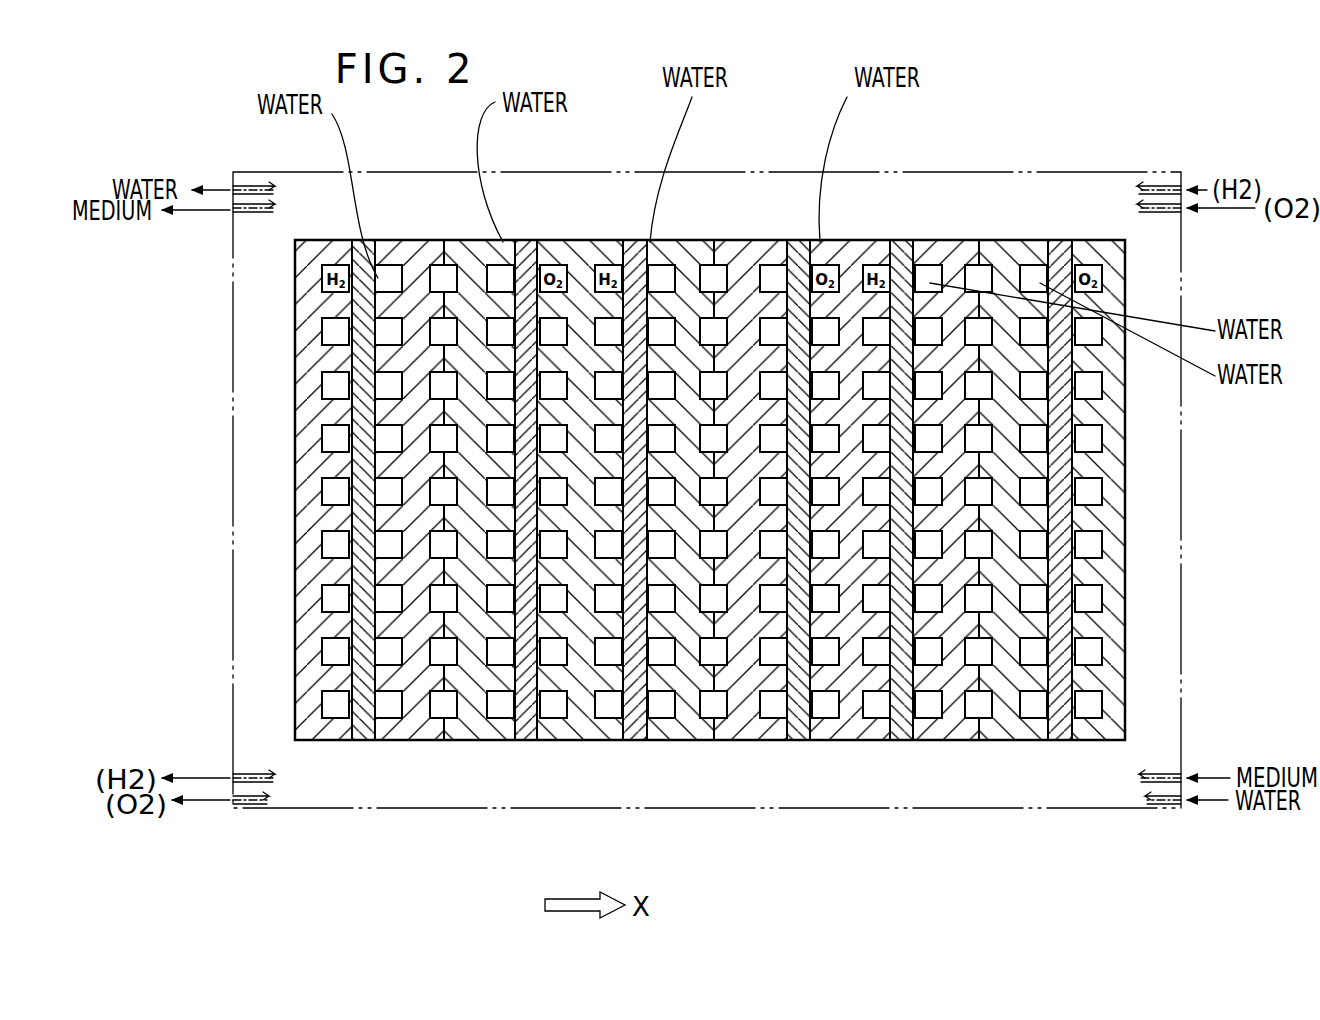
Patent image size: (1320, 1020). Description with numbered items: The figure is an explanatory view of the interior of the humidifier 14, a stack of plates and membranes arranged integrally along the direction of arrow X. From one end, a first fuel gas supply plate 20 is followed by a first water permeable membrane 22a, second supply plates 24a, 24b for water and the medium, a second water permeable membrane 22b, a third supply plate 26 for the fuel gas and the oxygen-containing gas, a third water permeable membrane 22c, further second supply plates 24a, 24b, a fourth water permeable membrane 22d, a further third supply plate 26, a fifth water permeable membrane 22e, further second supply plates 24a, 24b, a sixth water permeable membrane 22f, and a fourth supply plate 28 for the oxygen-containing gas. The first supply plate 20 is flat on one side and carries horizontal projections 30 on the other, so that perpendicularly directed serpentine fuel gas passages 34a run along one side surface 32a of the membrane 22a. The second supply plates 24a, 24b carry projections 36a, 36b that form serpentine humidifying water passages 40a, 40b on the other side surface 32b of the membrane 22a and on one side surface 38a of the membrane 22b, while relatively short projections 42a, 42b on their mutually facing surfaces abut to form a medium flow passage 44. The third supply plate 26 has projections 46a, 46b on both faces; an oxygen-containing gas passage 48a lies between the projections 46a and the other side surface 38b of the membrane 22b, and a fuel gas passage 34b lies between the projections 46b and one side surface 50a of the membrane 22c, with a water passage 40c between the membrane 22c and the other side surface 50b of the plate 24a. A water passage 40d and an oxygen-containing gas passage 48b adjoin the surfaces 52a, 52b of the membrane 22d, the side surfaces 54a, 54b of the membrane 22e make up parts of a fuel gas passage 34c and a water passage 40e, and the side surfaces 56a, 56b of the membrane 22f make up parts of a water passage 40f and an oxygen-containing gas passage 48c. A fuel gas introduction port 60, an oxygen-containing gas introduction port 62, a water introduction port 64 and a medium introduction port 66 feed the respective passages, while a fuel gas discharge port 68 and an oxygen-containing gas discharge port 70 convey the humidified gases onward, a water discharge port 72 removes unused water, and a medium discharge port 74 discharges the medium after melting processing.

The humidifier 14 is at (1258, 110).
The first fuel gas supply plate 20 is at (322, 238).
The first water permeable membrane 22a is at (364, 238).
The second water permeable membrane 22b is at (528, 238).
The third water permeable membrane 22c is at (632, 238).
The fourth water permeable membrane 22d is at (801, 238).
The fifth water permeable membrane 22e is at (903, 238).
The sixth water permeable membrane 22f is at (1060, 238).
The second supply plate 24a is at (406, 238).
The second supply plate 24b is at (480, 238).
The third supply plate 26 is at (572, 238).
The fourth supply plate 28 is at (1102, 238).
The projections 30 is at (335, 470).
The one side surface 32a is at (352, 357).
The other side surface 32b is at (365, 740).
The fuel gas passages 34a is at (330, 390).
The fuel gas passage 34b is at (612, 703).
The fuel gas passage 34c is at (878, 710).
The projections 36a is at (392, 700).
The projections 36b is at (495, 622).
The one side surface 38a is at (470, 694).
The other side surface 38b is at (545, 702).
The humidifying water passage 40a is at (388, 655).
The humidifying water passage 40b is at (500, 492).
The water passage 40c is at (690, 680).
The water passage 40d is at (762, 712).
The water passage 40e is at (930, 707).
The water passage 40f is at (1032, 707).
The projections 42a is at (436, 730).
The projections 42b is at (454, 723).
The medium flow passage 44 is at (440, 545).
The projections 46a is at (570, 700).
The projections 46b is at (647, 737).
The oxygen-containing gas passage 48a is at (582, 705).
The oxygen containing gas passage 48b is at (822, 722).
The oxygen containing gas passage 48c is at (1090, 597).
The one side surface 50a is at (608, 270).
The other side surface 50b is at (665, 275).
The surface 52a is at (777, 738).
The surface 52b is at (805, 740).
The side surface 54a is at (879, 240).
The side surface 54b is at (937, 240).
The side surface 56a is at (1045, 740).
The side surface 56b is at (1073, 677).
The fuel gas introduction port 60 is at (1170, 179).
The oxygen containing gas introduction port 62 is at (1176, 238).
The water introduction port 64 is at (1166, 808).
The medium introduction port 66 is at (1165, 772).
The fuel gas discharge port 68 is at (246, 774).
The oxygen containing gas discharge port 70 is at (262, 806).
The water discharge port 72 is at (256, 184).
The medium discharge port 74 is at (252, 213).